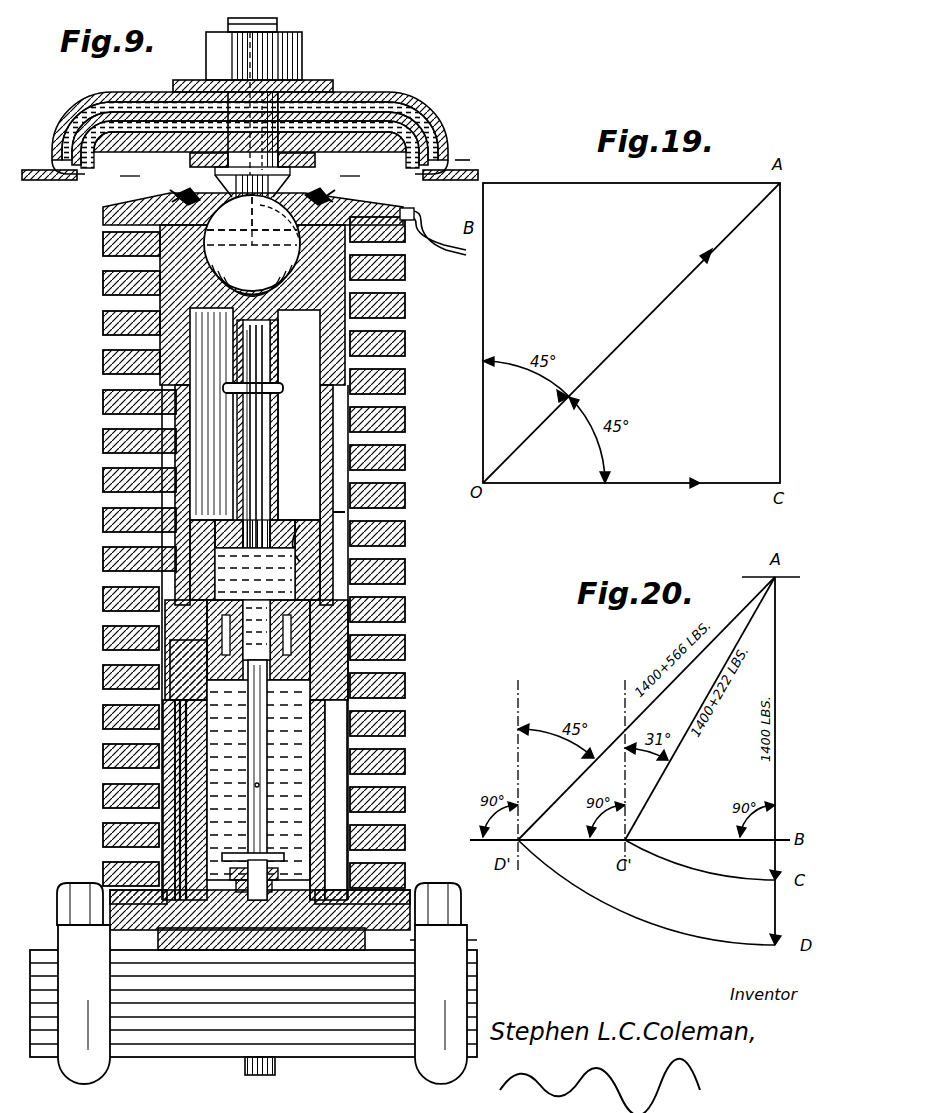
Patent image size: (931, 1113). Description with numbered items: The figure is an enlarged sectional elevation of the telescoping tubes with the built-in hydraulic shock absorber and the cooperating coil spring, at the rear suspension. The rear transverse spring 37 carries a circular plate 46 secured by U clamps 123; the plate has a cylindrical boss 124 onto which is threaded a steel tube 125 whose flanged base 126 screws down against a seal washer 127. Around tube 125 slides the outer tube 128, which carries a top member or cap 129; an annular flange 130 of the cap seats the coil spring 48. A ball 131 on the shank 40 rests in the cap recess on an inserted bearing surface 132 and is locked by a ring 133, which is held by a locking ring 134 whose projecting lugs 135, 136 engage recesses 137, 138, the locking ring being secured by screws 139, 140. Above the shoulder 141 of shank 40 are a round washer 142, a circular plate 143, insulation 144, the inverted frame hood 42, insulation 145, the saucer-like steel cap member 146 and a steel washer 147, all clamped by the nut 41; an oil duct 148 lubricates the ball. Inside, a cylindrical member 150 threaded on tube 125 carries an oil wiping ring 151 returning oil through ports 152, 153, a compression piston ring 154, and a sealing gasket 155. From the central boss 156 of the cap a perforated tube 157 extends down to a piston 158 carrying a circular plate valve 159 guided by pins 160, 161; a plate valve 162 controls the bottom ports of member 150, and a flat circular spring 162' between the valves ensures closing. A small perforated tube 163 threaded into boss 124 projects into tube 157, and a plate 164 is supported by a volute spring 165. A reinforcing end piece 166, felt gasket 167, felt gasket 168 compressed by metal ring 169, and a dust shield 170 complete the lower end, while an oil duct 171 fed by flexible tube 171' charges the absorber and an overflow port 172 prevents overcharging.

The oil duct 148 is at (262, 44).
The nut 41 is at (303, 56).
The steel washer 147 is at (333, 84).
The steel cap saucer like member 146 is at (412, 94).
The inverted cap-like member or frame hood 42 is at (45, 184).
The insulation 145 is at (482, 153).
The shank 40 is at (253, 103).
The shoulder 141 is at (250, 165).
The round washer 142 is at (193, 160).
The locking ring 134 is at (300, 172).
The insulation 144 is at (370, 166).
The circular plate 143 is at (124, 174).
The projecting lug 135 is at (203, 194).
The screw 139 is at (176, 193).
The projecting lug 136 is at (312, 194).
The screw 140 is at (327, 197).
The annular flange 130 is at (103, 216).
The coil spring 48 is at (397, 458).
The circular sealing gasket 155 is at (183, 580).
The circular felt gasket 167 is at (165, 620).
The reinforcing circular end piece 166 is at (170, 662).
The contracting metal ring 169 is at (165, 700).
The metal dust shield 170 is at (170, 780).
The flat circular spring 162' is at (363, 650).
The seal washer 127 is at (160, 938).
The flanged base 126 is at (165, 906).
The cylindrical boss 124 is at (261, 948).
The rear transverse spring 37 is at (348, 1062).
The circular plate 46 is at (466, 941).
The U clamps 123 is at (447, 1008).
The ball 131 is at (252, 245).
The inserted bearing surface 132 is at (252, 280).
The ring 133 is at (252, 233).
The recess 137 is at (237, 213).
The recess 138 is at (280, 224).
The top member or cap 129 is at (211, 414).
The central boss 156 is at (290, 372).
The tube 128 is at (318, 430).
The tube 157 is at (252, 462).
The oil wiping ring 151 is at (226, 490).
The port 152 is at (232, 524).
The cylindrical member 150 is at (322, 512).
The port 153 is at (286, 520).
The compression piston ring 154 is at (258, 530).
The overflow hole or port 172 is at (326, 518).
The circular plate valve 159 is at (255, 610).
The plate valve 162 is at (258, 640).
The felt gasket 168 is at (258, 780).
The piston 158 is at (289, 780).
The pin 160 is at (228, 694).
The pin 161 is at (288, 695).
The small tube 163 is at (271, 772).
The steel tube 125 is at (317, 792).
The volute spring 165 is at (228, 874).
The plate 164 is at (276, 860).
The oil duct 171 is at (430, 215).
The flexible tube 171' is at (436, 206).